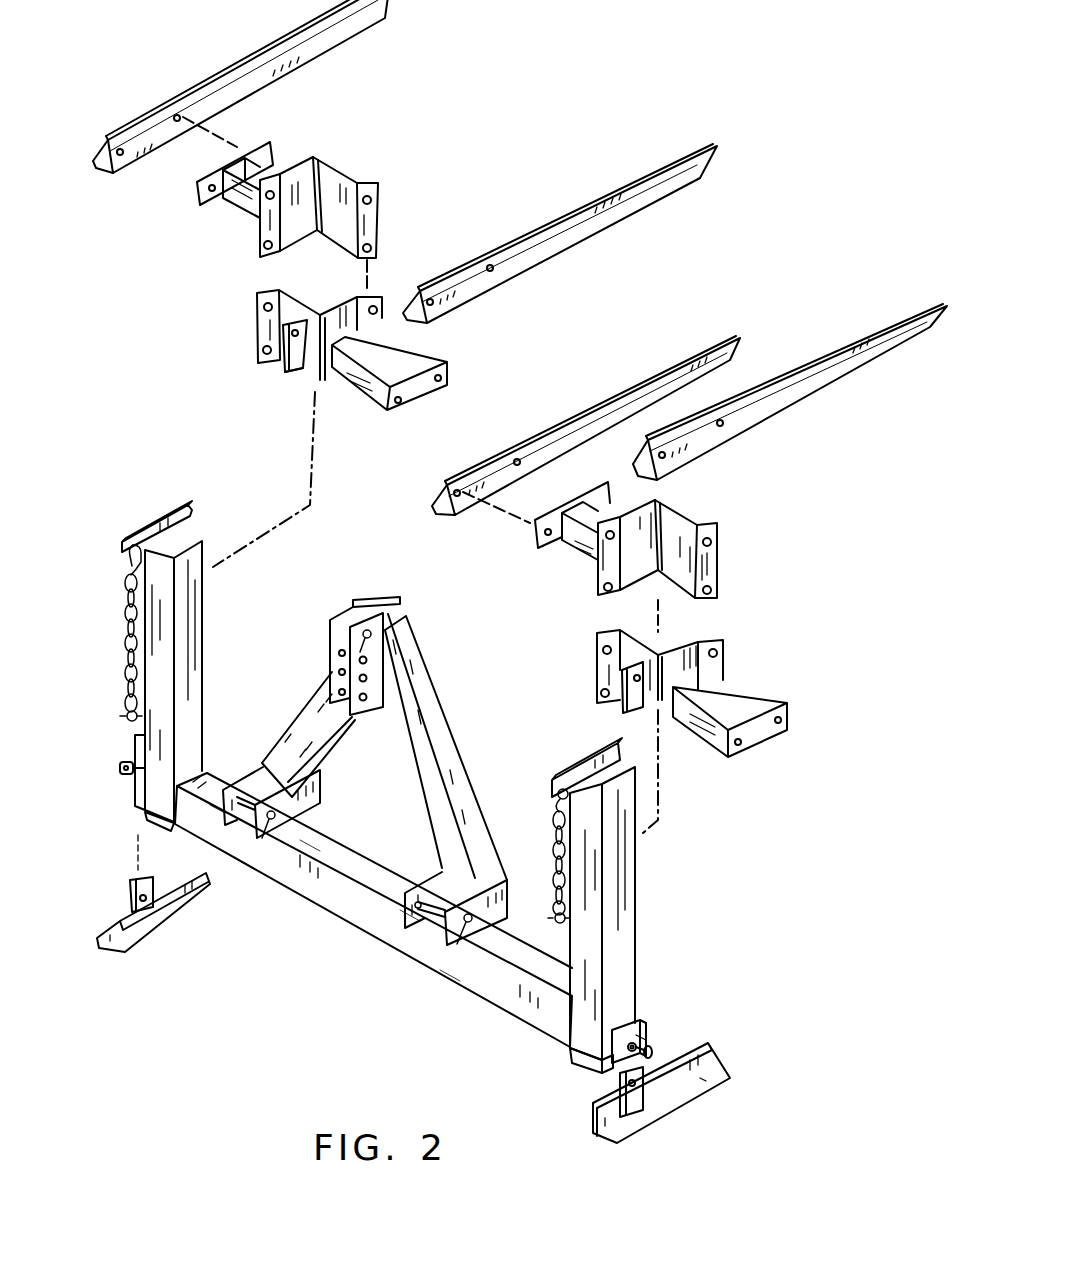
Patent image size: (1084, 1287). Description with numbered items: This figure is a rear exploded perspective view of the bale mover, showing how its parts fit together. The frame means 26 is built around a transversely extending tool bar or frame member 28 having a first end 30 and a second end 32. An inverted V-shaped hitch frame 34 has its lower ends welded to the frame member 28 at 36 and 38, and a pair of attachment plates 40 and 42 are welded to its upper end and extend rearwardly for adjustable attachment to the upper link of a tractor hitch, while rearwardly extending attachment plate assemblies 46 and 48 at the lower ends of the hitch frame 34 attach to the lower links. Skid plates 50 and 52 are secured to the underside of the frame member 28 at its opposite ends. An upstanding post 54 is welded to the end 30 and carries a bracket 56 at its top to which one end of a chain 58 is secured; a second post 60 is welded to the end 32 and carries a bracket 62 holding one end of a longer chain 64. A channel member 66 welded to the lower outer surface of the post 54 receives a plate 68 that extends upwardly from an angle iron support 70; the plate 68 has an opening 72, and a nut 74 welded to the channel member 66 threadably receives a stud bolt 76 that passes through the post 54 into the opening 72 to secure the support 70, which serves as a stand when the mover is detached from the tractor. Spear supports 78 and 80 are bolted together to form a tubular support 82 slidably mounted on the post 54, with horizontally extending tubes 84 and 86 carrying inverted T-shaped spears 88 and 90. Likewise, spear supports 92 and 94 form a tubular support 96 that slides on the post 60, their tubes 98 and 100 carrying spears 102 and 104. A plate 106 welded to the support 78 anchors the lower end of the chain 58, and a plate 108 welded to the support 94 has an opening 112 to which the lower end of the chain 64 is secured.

The frame means 26 is at (458, 802).
The frame member 28 is at (374, 915).
The first end 30 is at (573, 1013).
The second end 32 is at (213, 838).
The hitch frame 34 is at (297, 705).
The weld location 36 is at (490, 947).
The weld location 38 is at (318, 812).
The attachment plate 40 is at (380, 623).
The attachment plate 42 is at (347, 603).
The attachment plate assembly 46 is at (420, 877).
The attachment plate assembly 48 is at (242, 765).
The skid plate 50 is at (577, 1060).
The skid plate 52 is at (137, 842).
The post 54 is at (604, 913).
The bracket 56 is at (580, 763).
The chain 58 is at (553, 837).
The post 60 is at (141, 659).
The bracket 62 is at (158, 518).
The chain 64 is at (123, 623).
The channel member 66 is at (137, 783).
The plate 68 is at (633, 1100).
The angle iron support 70 is at (466, 1018).
The opening 72 is at (655, 1040).
The nut 74 is at (580, 1062).
The stud bolt 76 is at (650, 1050).
The spear support 78 is at (726, 718).
The spear support 80 is at (667, 535).
The tubular support 82 is at (666, 540).
The tube 84 is at (740, 705).
The tube 86 is at (580, 535).
The spear 88 is at (820, 397).
The spear 90 is at (653, 370).
The spear support 92 is at (295, 165).
The spear support 94 is at (333, 369).
The tubular support 96 is at (237, 303).
The tube 98 is at (237, 200).
The tube 100 is at (390, 348).
The spear 102 is at (265, 48).
The spear 104 is at (592, 197).
The plate 106 is at (663, 717).
The plate 108 is at (293, 374).
The opening 112 is at (290, 333).